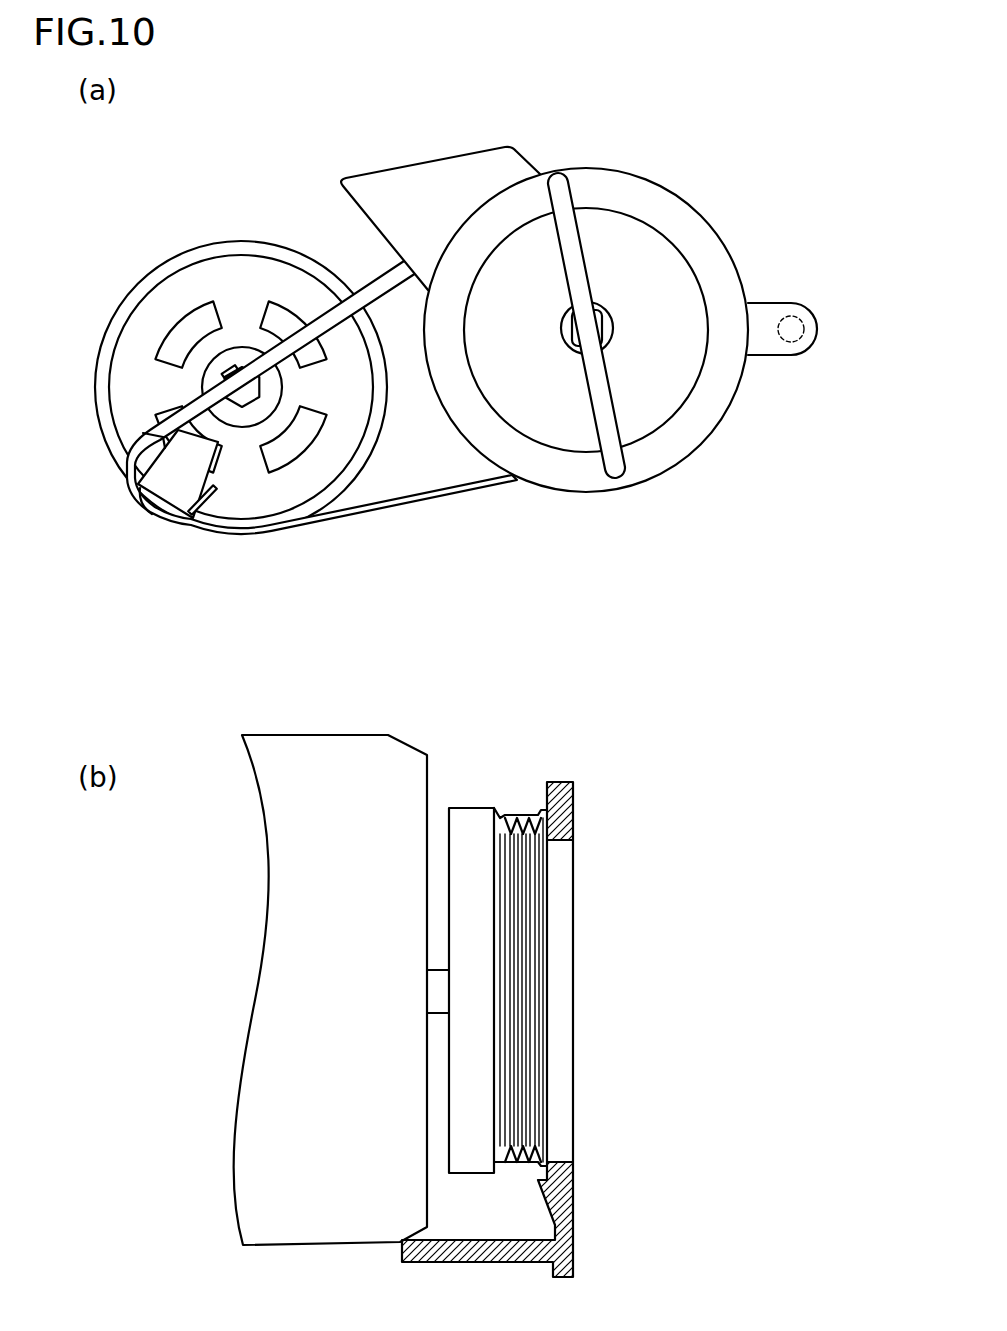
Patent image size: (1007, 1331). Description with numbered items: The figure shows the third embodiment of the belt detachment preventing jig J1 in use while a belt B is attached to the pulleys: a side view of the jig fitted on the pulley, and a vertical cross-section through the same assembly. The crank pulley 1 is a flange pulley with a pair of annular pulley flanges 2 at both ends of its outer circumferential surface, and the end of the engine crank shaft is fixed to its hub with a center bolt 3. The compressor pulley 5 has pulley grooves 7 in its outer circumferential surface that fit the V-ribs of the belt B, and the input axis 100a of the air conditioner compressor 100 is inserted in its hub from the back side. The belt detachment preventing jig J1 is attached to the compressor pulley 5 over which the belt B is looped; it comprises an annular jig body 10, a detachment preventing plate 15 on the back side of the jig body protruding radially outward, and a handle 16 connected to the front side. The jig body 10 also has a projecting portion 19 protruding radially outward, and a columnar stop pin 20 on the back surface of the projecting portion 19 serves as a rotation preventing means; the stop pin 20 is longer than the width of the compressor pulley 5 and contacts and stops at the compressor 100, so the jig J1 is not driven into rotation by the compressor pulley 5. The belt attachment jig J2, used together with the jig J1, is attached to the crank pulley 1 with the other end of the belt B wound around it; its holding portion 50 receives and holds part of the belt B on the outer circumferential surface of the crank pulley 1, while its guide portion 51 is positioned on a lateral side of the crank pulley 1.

The crank pulley 1 is at (125, 376).
The pulley flanges 2 is at (190, 256).
The center bolt 3 is at (253, 386).
The compressor pulley 5 is at (680, 368).
The pulley grooves 7 is at (598, 323).
The jig body 10 is at (695, 434).
The detachment preventing plate 15 is at (430, 185).
The handle 16 is at (618, 470).
The projecting portion 19 is at (776, 312).
The stop pin 20 is at (810, 318).
The holding portion 50 is at (137, 500).
The guide portion 51 is at (132, 443).
The belt B is at (368, 288).
The belt detachment preventing jig J1 is at (668, 185).
The belt attachment jig J2 is at (165, 523).
The air conditioner compressor 100 is at (316, 1230).
The input axis 100a is at (434, 968).